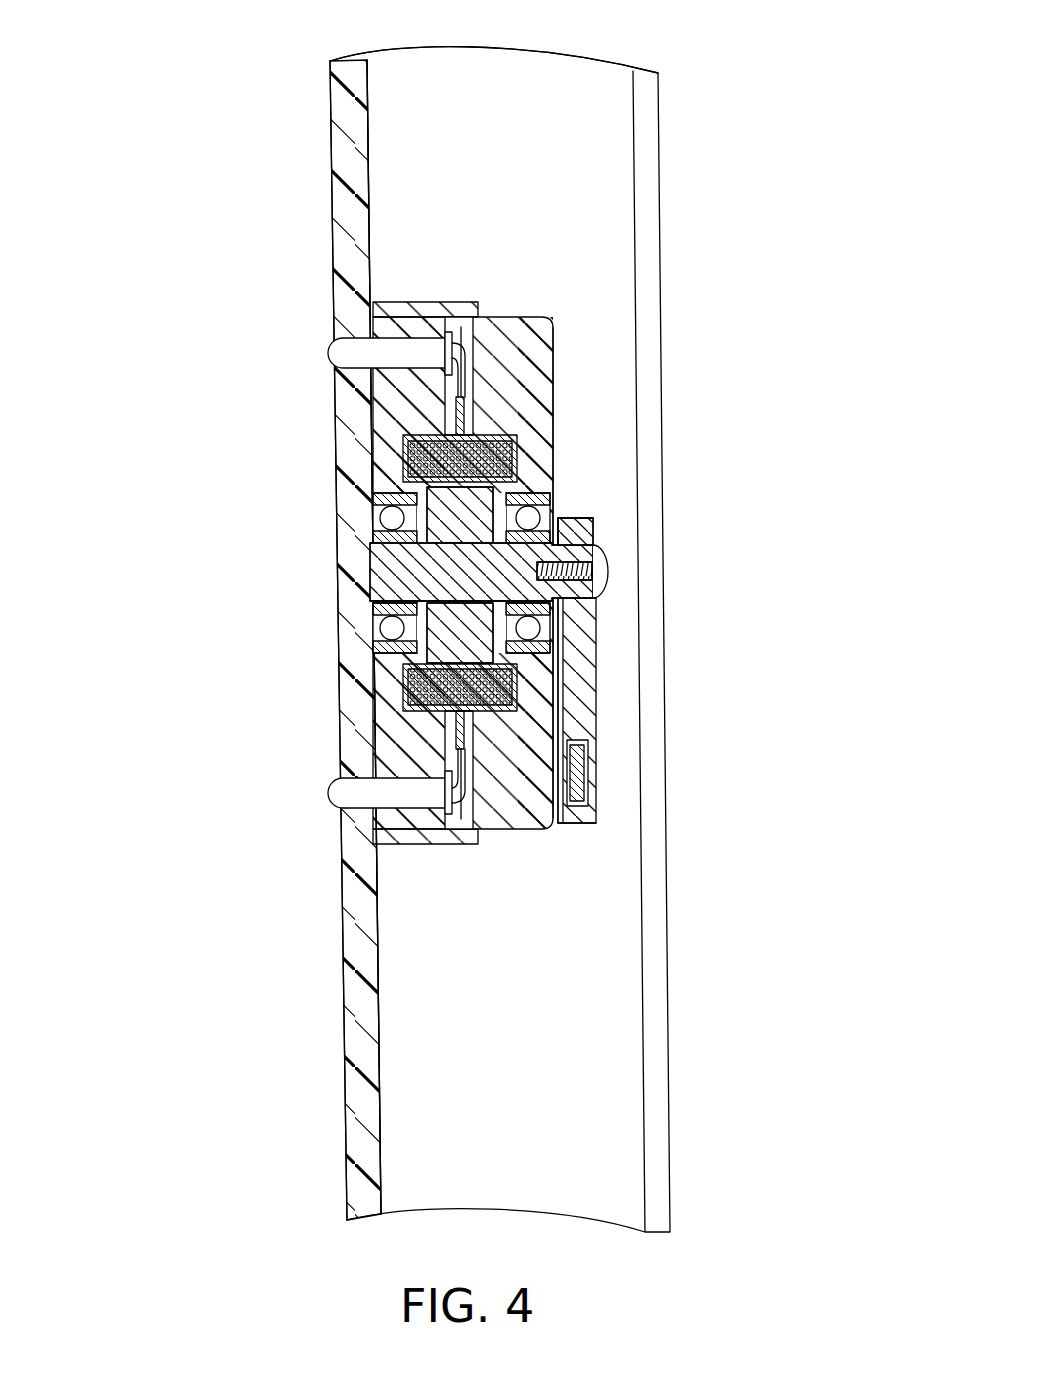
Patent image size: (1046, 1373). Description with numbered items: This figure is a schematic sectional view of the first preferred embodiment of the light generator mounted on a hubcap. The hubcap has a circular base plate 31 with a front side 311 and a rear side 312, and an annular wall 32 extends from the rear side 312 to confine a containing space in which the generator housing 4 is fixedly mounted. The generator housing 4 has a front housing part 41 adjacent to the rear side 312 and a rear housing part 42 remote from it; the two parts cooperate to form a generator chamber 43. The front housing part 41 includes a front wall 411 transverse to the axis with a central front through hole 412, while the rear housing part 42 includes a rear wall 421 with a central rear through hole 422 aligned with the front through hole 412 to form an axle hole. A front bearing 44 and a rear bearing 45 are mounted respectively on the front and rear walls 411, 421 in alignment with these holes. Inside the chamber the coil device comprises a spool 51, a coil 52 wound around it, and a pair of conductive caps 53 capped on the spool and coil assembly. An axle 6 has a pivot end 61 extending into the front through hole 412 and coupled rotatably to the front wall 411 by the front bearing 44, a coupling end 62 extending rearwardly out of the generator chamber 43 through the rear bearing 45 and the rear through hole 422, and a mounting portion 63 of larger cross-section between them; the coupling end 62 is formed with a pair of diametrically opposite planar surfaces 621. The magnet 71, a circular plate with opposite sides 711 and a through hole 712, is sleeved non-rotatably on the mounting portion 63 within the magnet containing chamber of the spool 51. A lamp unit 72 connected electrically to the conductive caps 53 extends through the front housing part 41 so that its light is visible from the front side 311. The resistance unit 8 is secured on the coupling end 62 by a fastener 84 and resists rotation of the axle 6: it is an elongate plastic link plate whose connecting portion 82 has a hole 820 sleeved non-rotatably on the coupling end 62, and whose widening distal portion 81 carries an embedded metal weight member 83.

The circular base plate 31 is at (345, 106).
The front side 311 is at (331, 158).
The rear side 312 is at (368, 162).
The annular wall 32 is at (409, 307).
The generator housing 4 is at (475, 870).
The front housing part 41 is at (383, 328).
The front wall 411 is at (383, 429).
The front through hole 412 is at (385, 632).
The rear housing part 42 is at (552, 337).
The rear wall 421 is at (597, 691).
The rear through hole 422 is at (552, 495).
The generator chamber 43 is at (450, 845).
The front bearing 44 is at (372, 479).
The rear bearing 45 is at (596, 650).
The spool 51 is at (406, 677).
The coil 52 is at (500, 437).
The conductive caps 53 is at (445, 775).
The axle 6 is at (367, 592).
The pivot end 61 is at (388, 565).
The coupling end 62 is at (597, 540).
The planar surfaces 621 is at (577, 517).
The mounting portion 63 is at (455, 603).
The magnet 71 is at (425, 678).
The opposite sides 711 is at (440, 650).
The through hole 712 is at (463, 547).
The lamp unit 72 is at (331, 352).
The resistance unit 8 is at (597, 826).
The distal portion 81 is at (597, 755).
The connecting portion 82 is at (572, 513).
The weight member 83 is at (597, 796).
The fastener 84 is at (605, 575).
The hole 820 is at (596, 616).